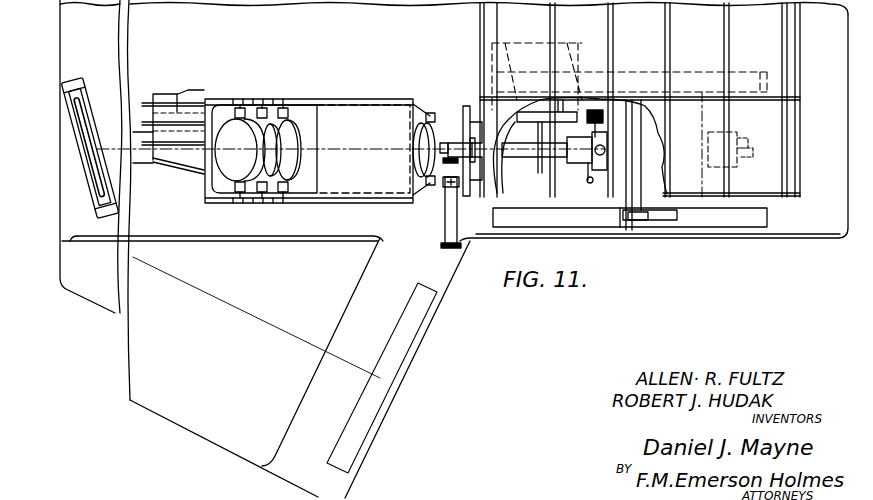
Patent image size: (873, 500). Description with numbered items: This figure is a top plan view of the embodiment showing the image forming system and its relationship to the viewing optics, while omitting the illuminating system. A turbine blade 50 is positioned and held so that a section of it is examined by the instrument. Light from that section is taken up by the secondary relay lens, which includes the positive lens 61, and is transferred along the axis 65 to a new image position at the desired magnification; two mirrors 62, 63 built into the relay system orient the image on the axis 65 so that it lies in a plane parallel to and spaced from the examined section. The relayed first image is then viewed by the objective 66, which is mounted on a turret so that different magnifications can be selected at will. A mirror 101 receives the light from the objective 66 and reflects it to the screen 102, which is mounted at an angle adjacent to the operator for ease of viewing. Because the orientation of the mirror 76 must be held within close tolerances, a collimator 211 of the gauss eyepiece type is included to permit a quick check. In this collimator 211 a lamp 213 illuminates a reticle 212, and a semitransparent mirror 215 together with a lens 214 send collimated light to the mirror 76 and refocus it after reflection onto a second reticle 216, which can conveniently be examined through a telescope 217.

The mirror 101 is at (100, 122).
The objective 66 is at (142, 157).
The mirror 62 is at (232, 132).
The positive lens 61 is at (275, 130).
The mirror 63 is at (289, 128).
The axis 65 is at (341, 149).
The lamp 213 is at (415, 145).
The reticle 212 is at (443, 142).
The semitransparent mirror 215 is at (447, 140).
The lens 214 is at (480, 152).
The mirror 76 is at (538, 157).
The turbine blade 50 is at (555, 152).
The collimator 211 is at (457, 165).
The second reticle 216 is at (449, 166).
The telescope 217 is at (452, 252).
The screen 102 is at (397, 355).